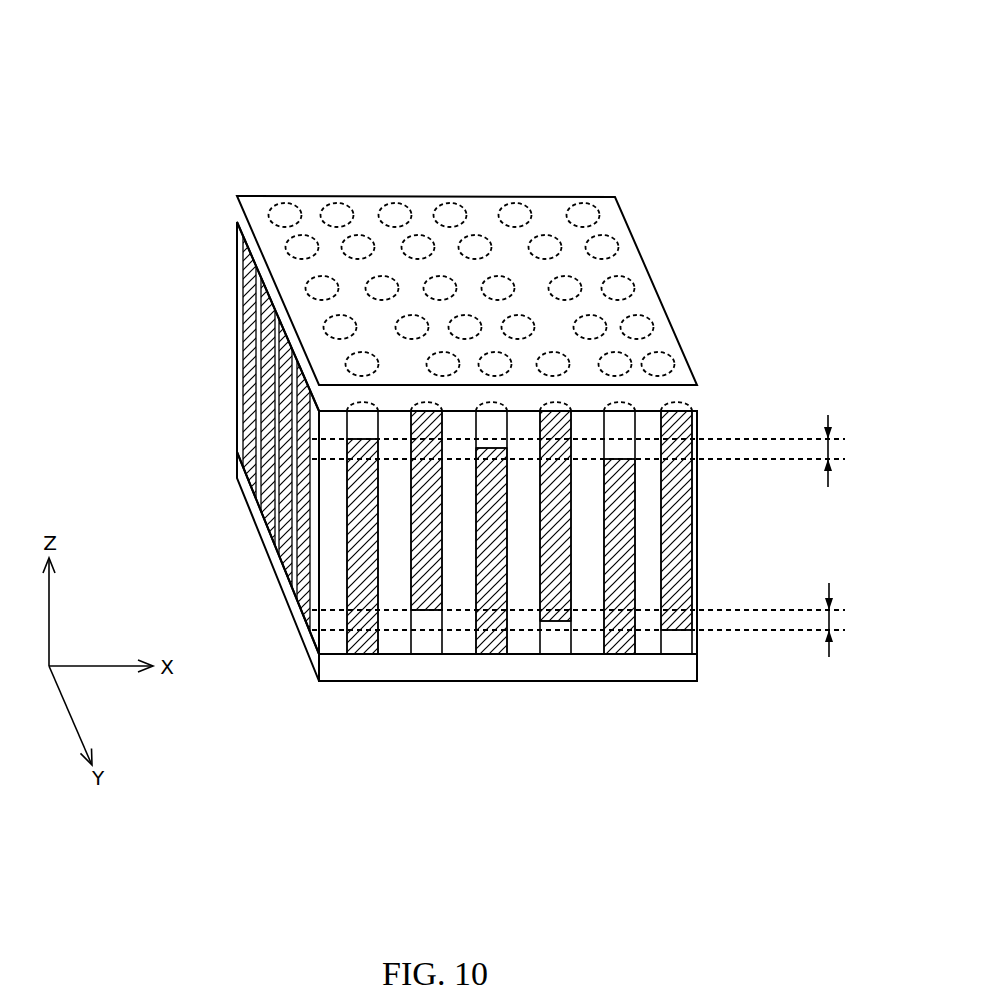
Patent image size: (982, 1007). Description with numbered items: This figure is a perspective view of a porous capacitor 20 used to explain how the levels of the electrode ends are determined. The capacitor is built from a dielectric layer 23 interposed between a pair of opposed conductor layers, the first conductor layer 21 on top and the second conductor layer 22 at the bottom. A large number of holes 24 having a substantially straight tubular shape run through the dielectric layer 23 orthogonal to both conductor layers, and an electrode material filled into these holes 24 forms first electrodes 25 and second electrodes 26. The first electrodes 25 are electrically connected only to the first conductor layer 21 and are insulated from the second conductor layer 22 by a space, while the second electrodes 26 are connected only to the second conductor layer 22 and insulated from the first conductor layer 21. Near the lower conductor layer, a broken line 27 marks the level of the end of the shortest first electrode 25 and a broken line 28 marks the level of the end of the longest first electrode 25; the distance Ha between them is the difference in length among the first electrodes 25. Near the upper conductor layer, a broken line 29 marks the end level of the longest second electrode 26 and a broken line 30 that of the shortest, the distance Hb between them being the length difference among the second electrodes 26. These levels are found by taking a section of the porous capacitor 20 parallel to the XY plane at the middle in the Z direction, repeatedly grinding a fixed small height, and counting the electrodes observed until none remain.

The porous capacitor 20 is at (452, 120).
The first conductor layer 21 is at (698, 390).
The second conductor layer 22 is at (698, 670).
The dielectric layer 23 is at (697, 560).
The holes 24 is at (348, 496).
The first electrodes 25 is at (427, 578).
The second electrodes 26 is at (363, 578).
The broken line 27 is at (750, 609).
The broken line 28 is at (750, 631).
The broken line 29 is at (748, 438).
The broken line 30 is at (748, 461).
The distance Ha is at (833, 612).
The distance Hb is at (833, 442).